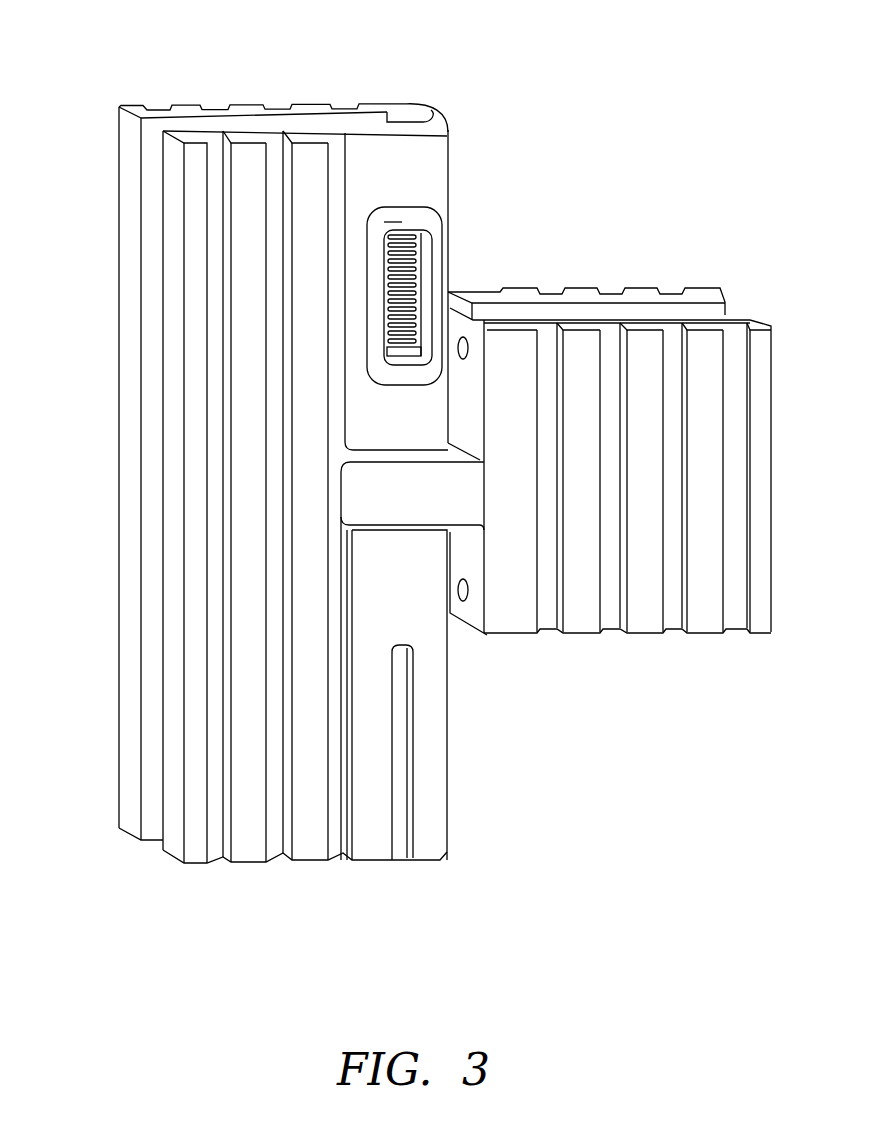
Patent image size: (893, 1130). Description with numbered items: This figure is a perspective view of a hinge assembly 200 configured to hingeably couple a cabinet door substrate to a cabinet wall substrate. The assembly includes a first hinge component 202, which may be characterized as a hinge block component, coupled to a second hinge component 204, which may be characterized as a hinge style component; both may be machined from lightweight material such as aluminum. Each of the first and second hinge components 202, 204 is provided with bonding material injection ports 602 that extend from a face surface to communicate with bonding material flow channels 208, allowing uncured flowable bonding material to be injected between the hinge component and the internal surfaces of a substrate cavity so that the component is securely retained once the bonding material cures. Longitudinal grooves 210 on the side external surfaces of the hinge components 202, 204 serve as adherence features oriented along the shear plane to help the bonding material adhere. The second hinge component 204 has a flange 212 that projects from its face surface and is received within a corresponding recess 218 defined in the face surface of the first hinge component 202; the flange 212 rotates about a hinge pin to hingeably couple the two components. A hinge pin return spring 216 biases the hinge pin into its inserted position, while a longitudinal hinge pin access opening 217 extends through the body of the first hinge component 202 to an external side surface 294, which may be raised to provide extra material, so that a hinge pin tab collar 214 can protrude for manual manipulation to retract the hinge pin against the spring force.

The hinge assembly 200 is at (746, 63).
The first hinge component 202 is at (135, 106).
The second hinge component 204 is at (701, 289).
The bonding material flow channels 208 is at (207, 124).
The longitudinal grooves 210 is at (397, 852).
The flange 212 is at (430, 500).
The hinge pin tab collar 214 is at (405, 352).
The hinge pin return spring 216 is at (428, 237).
The longitudinal hinge pin access opening 217 is at (430, 258).
The recess 218 is at (343, 527).
The external side surface 294 is at (392, 221).
The bonding material injection ports 602 is at (468, 343).